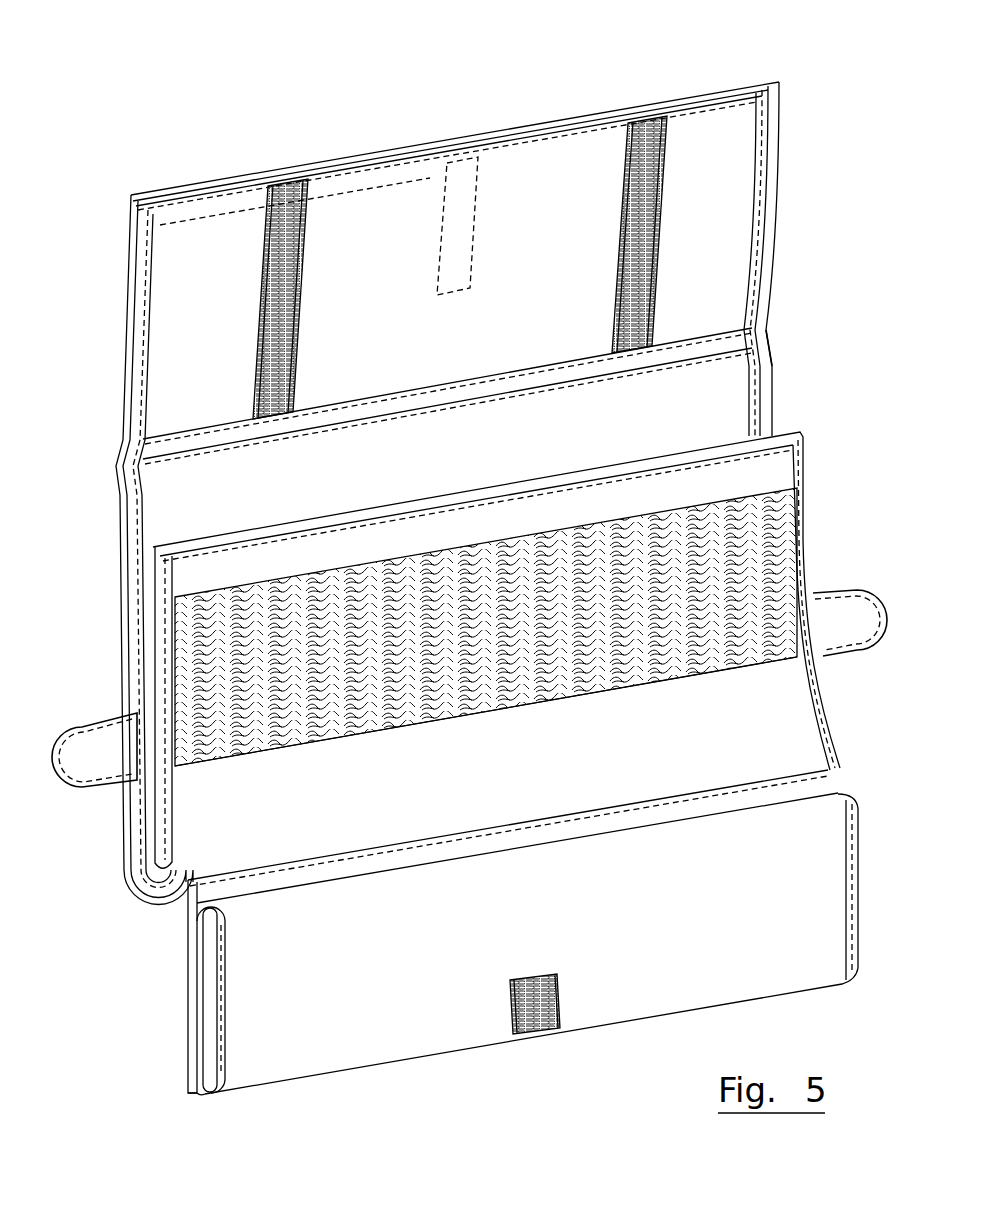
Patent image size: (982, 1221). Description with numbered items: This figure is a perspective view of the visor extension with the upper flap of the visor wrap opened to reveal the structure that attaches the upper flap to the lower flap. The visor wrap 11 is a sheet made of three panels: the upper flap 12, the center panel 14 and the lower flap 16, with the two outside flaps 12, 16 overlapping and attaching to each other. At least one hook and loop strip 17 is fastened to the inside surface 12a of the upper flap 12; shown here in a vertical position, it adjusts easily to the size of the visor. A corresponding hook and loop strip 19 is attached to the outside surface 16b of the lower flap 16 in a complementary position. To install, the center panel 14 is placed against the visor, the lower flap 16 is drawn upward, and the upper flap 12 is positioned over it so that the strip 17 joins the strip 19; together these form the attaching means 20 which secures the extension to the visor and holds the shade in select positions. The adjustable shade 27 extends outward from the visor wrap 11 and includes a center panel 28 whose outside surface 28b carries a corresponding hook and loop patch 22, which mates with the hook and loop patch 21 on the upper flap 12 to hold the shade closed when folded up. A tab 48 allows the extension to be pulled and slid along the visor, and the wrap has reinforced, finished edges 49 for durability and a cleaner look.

The visor wrap 11 is at (108, 462).
The upper flap 12 is at (723, 263).
The inside surface of upper flap 12a is at (565, 316).
The center panel 14 is at (730, 407).
The lower flap 16 is at (767, 473).
The outside surface of lower flap 16b is at (565, 797).
The hook and loop strip 17 is at (283, 222).
The corresponding hook and loop strip 19 is at (187, 637).
The attaching means 20 is at (314, 222).
The hook and loop patch 21 is at (465, 175).
The corresponding hook and loop patch 22 is at (560, 1003).
The adjustable shade 27 is at (165, 1062).
The center panel of shade 28 is at (730, 960).
The outside surface of center shade panel 28b is at (565, 935).
The tab 48 is at (118, 776).
The reinforced finished edges 49 is at (768, 377).